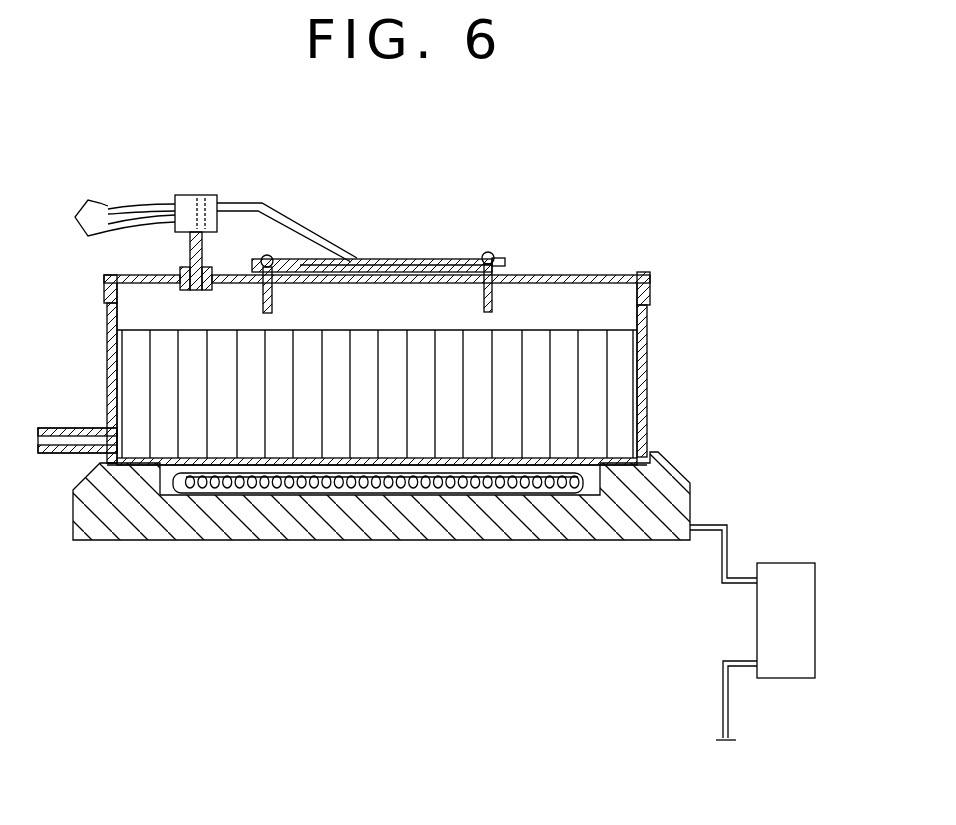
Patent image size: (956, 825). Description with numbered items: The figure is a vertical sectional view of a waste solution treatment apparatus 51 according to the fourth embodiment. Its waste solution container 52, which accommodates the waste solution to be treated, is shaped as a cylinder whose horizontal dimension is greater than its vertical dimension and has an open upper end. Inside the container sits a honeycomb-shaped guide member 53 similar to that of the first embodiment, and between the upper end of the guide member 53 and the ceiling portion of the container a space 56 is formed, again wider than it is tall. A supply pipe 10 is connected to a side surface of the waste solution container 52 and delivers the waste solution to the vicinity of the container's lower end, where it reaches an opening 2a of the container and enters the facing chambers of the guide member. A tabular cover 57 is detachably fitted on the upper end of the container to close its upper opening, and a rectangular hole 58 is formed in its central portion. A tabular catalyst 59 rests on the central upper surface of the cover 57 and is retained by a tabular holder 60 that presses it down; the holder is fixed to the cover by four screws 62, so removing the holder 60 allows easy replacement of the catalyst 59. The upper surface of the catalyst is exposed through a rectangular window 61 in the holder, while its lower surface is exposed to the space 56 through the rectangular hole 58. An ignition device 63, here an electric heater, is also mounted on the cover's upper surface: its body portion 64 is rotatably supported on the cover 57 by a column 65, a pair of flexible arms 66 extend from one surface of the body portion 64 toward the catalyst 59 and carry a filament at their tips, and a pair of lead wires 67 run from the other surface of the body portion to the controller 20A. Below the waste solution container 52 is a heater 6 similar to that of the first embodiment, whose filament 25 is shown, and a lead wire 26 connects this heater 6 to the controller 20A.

The waste solution treatment apparatus 51 is at (597, 153).
The waste solution container 52 is at (645, 363).
The honeycomb-shaped guide member 53 is at (238, 428).
The space 56 is at (388, 317).
The cover 57 is at (618, 273).
The rectangular hole 58 is at (418, 284).
The catalyst 59 is at (415, 259).
The holder 60 is at (505, 262).
The rectangular window 61 is at (373, 259).
The screws 62 is at (487, 252).
The ignition device 63 is at (278, 135).
The body portion 64 is at (207, 195).
The column 65 is at (190, 253).
The flexible arms 66 is at (250, 203).
The lead wires 67 is at (758, 703).
The supply pipe 10 is at (83, 428).
The opening 2a is at (125, 440).
The filament 25 is at (390, 493).
The heater 6 is at (565, 520).
The lead wire 26 is at (730, 575).
The controller 20A is at (812, 625).